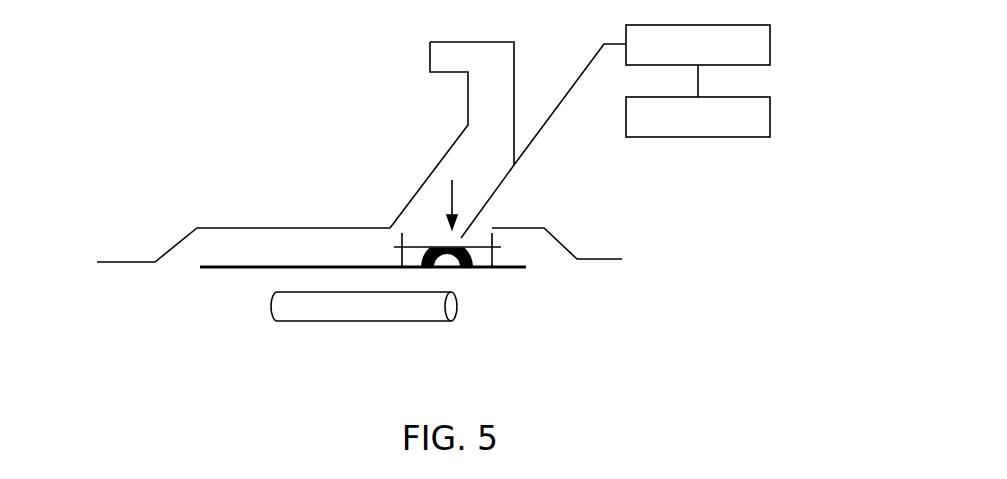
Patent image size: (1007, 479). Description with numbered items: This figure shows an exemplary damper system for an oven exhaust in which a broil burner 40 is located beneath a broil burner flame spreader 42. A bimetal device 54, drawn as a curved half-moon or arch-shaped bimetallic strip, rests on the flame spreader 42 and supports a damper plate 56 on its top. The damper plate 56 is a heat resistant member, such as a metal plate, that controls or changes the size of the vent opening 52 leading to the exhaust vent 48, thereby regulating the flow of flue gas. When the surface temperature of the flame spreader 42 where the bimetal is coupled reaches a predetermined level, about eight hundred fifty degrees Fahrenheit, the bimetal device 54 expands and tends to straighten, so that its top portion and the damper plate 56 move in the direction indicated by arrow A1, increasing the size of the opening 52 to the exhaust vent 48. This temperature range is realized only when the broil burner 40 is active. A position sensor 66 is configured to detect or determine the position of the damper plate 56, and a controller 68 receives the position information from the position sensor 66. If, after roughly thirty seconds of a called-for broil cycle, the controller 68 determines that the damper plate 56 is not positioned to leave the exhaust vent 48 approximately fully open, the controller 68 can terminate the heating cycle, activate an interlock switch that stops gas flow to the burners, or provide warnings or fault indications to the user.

The broil burner 40 is at (452, 303).
The broil burner flame spreader 42 is at (230, 266).
The exhaust vent 48 is at (430, 57).
The vent opening 52 is at (423, 241).
The bimetal device 54 is at (421, 255).
The damper plate 56 is at (493, 227).
The position sensor 66 is at (770, 44).
The controller 68 is at (770, 116).
The arrow indicating direction of displacement A1 is at (453, 207).